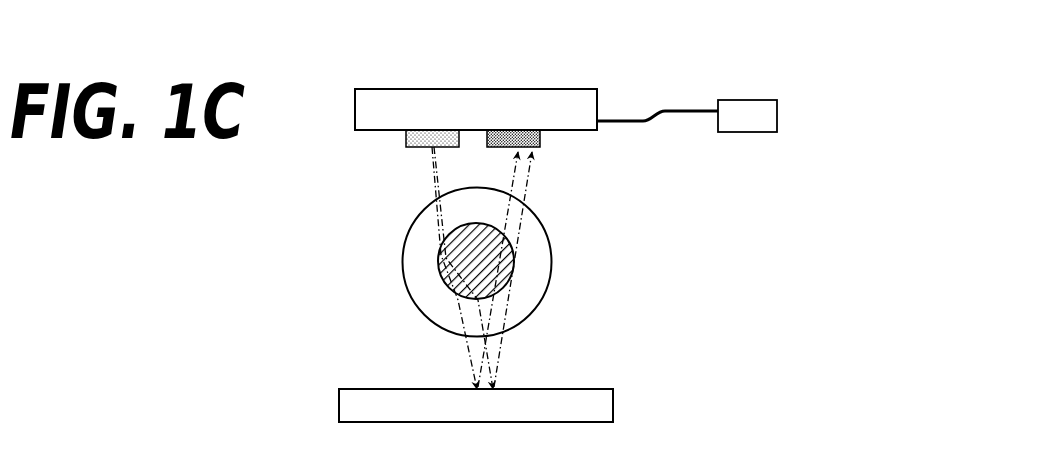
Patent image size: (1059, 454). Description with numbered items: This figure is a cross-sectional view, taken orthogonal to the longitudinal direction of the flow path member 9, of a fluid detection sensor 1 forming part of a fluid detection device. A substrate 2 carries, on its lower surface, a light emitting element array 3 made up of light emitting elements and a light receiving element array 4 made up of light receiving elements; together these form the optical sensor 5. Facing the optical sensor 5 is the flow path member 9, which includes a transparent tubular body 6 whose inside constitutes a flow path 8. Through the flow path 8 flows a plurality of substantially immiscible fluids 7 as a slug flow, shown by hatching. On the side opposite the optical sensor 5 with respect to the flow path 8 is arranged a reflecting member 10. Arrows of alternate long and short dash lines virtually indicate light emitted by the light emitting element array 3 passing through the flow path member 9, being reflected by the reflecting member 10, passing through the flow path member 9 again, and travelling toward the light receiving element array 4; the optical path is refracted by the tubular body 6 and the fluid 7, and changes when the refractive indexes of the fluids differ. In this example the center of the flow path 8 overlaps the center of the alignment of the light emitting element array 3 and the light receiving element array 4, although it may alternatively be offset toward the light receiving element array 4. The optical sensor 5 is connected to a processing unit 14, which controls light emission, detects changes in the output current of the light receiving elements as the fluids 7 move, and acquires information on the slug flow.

The fluid detection sensor 1 is at (591, 68).
The substrate 2 is at (370, 105).
The light emitting element array 3 is at (436, 138).
The light receiving element array 4 is at (513, 137).
The optical sensor 5 is at (598, 112).
The tubular body 6 is at (418, 235).
The fluid 7 is at (445, 282).
The flow path 8 is at (442, 263).
The flow path member 9 is at (549, 238).
The reflecting member 10 is at (597, 389).
The processing unit 14 is at (763, 100).